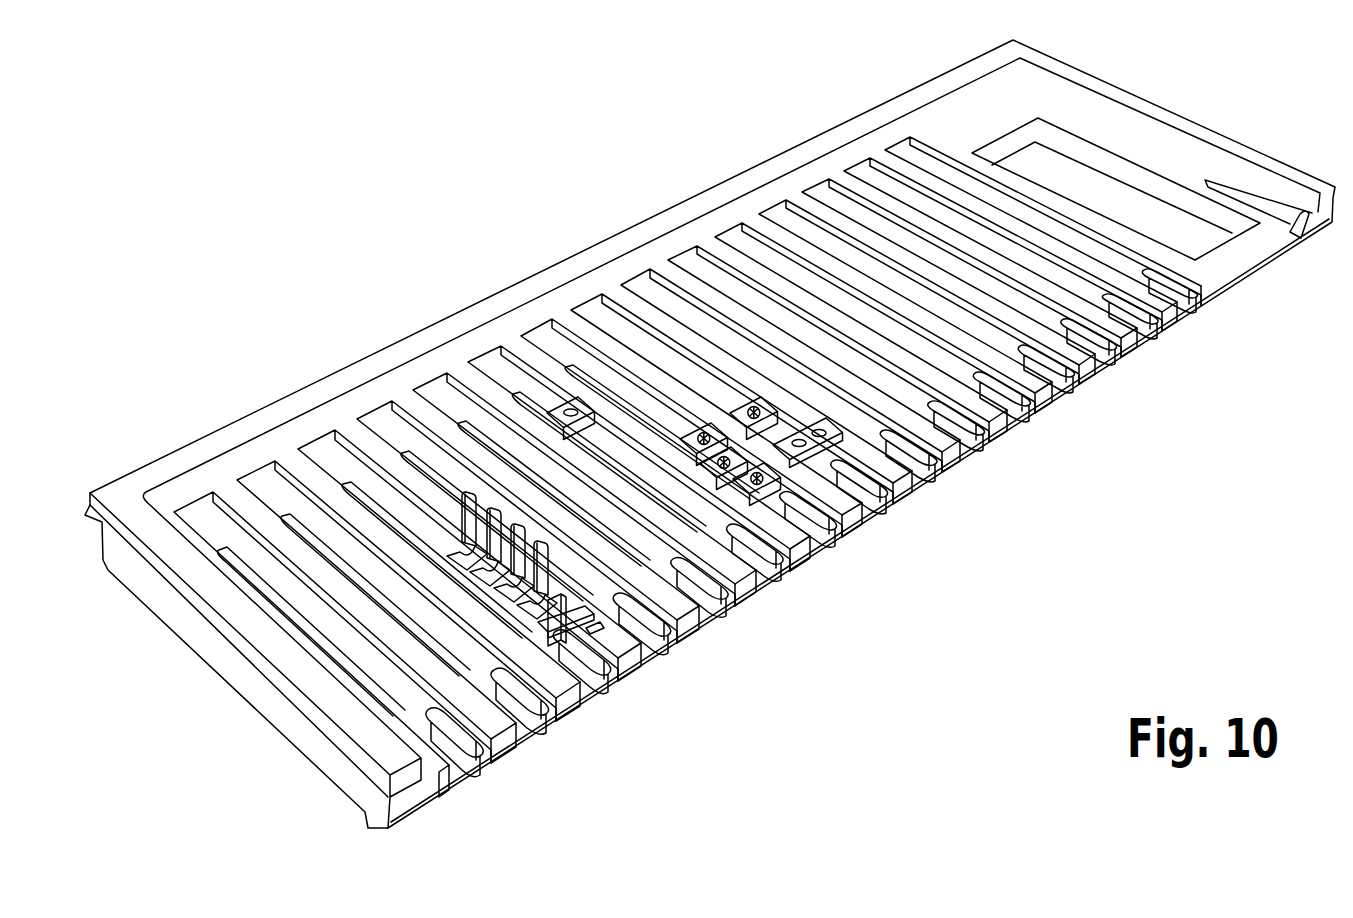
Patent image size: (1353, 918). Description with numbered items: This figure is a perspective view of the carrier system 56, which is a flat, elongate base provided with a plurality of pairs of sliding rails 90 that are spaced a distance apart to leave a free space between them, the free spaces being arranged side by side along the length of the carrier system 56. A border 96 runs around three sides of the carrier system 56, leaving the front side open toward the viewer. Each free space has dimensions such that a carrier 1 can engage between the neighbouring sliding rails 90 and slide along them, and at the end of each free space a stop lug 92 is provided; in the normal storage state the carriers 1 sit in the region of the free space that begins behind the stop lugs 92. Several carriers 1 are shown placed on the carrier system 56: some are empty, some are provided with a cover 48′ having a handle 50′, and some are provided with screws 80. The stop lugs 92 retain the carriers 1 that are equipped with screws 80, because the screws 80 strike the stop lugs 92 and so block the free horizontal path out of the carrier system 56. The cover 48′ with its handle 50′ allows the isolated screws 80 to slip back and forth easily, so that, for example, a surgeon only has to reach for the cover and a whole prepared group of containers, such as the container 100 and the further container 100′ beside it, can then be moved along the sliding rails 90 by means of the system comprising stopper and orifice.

The carrier system 56 is at (358, 209).
The border 96 is at (245, 637).
The container 100 is at (500, 642).
The container 100′ is at (481, 626).
The cover 48′ is at (538, 615).
The handle 50′ is at (603, 612).
The carrier 1 is at (838, 470).
The screw 80 is at (733, 452).
The sliding rail 90 is at (988, 422).
The stop lug 92 is at (1053, 377).